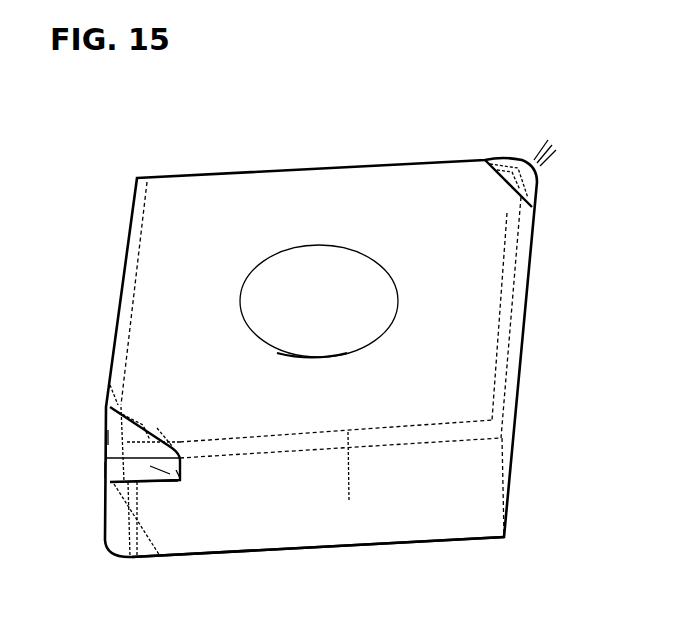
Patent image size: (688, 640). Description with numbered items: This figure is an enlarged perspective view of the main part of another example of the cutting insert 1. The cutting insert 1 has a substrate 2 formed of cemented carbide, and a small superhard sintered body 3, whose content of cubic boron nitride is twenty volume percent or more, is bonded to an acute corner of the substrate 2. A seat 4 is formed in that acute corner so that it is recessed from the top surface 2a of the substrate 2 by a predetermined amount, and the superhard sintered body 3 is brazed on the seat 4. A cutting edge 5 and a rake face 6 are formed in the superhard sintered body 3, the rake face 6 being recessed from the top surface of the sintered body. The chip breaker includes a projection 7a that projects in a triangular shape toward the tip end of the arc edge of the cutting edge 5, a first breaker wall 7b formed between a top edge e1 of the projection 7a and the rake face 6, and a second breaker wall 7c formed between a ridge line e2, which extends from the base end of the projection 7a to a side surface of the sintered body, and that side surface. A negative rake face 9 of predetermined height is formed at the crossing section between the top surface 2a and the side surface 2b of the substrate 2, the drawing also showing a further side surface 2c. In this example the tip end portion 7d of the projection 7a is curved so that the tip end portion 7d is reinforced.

The cutting insert 1 is at (341, 155).
The substrate 2 is at (437, 508).
The top surface 2a is at (238, 205).
The side surface 2b is at (452, 480).
The front side surface 2c is at (293, 550).
The superhard sintered body 3 is at (534, 160).
The seat 4 is at (128, 484).
The cutting edge 5 is at (105, 450).
The rake face 6 is at (107, 440).
The projection 7a is at (110, 385).
The first breaker wall 7b is at (160, 472).
The second breaker wall 7c is at (182, 478).
The tip end portion 7d is at (103, 470).
The top edge e1 is at (143, 423).
The ridge line e2 is at (157, 428).
The negative rake face 9 is at (349, 500).